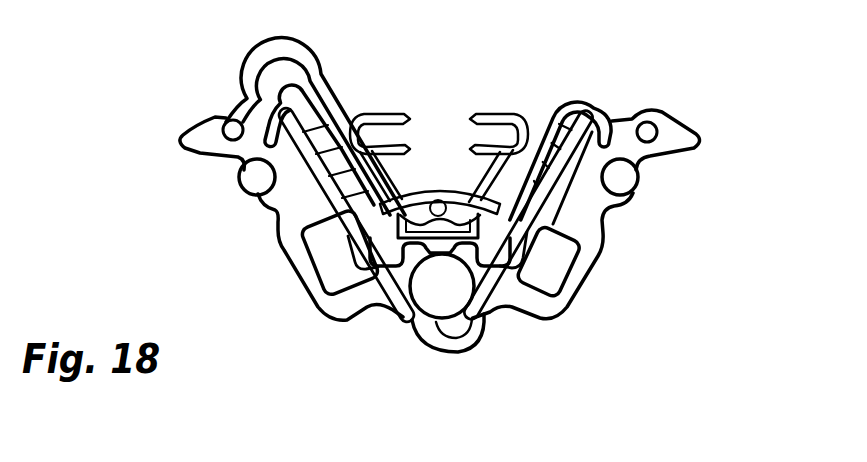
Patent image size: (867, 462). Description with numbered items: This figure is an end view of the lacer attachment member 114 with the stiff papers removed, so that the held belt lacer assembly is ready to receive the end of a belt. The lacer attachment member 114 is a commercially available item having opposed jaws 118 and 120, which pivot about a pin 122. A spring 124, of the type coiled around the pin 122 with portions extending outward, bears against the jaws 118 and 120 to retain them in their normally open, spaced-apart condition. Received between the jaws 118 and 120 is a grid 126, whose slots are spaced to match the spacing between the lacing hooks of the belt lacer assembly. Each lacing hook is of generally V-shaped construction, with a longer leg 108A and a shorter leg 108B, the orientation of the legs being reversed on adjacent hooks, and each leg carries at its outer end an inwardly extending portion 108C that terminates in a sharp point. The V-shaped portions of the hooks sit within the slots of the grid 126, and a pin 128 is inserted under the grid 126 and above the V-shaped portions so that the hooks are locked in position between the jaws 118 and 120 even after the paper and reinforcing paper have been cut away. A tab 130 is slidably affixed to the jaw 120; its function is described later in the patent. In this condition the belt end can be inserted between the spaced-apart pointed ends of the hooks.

The lacer attachment member 114 is at (695, 92).
The tab 130 is at (278, 60).
The jaw 120 is at (277, 232).
The jaw 118 is at (597, 205).
The spring 124 is at (375, 275).
The grid 126 is at (436, 200).
The pin 122 is at (442, 296).
The pin 128 is at (402, 310).
The longer leg 108A is at (405, 178).
The shorter leg 108B is at (478, 175).
The inwardly extending portion 108C is at (353, 125).